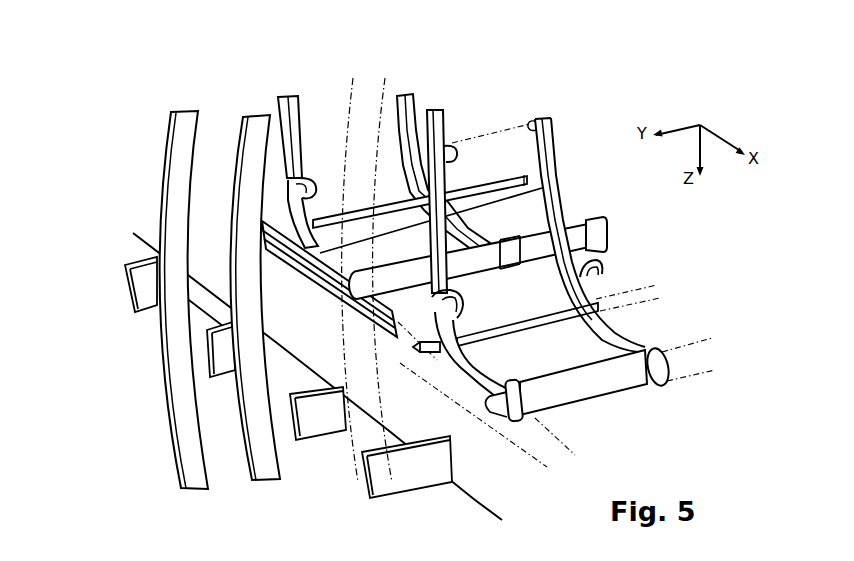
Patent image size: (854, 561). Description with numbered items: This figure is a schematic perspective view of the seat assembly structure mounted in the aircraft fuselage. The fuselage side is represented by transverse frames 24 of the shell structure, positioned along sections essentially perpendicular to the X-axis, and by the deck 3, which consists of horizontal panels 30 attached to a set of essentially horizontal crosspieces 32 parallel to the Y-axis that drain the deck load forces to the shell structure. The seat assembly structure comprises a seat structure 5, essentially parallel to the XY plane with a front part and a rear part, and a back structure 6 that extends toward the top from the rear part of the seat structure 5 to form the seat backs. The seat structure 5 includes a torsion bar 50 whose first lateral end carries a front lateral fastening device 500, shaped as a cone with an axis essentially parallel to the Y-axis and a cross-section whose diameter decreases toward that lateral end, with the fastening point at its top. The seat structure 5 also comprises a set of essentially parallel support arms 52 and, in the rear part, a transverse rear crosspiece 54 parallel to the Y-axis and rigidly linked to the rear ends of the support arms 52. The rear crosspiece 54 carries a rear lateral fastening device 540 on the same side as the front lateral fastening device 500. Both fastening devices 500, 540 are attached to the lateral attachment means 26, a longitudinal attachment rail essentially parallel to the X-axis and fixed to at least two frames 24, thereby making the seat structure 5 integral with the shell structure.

The deck 3 is at (451, 456).
The seat structure 5 is at (586, 402).
The back structure 6 is at (558, 185).
The frames 24 is at (181, 403).
The lateral attachment means 26 is at (312, 281).
The horizontal panels 30 is at (474, 499).
The crosspieces 32 is at (128, 297).
The torsion bar 50 is at (618, 387).
The support arms 52 is at (613, 350).
The rear crosspiece 54 is at (517, 326).
The front lateral fastening device 500 is at (505, 421).
The rear lateral fastening device 540 is at (426, 353).